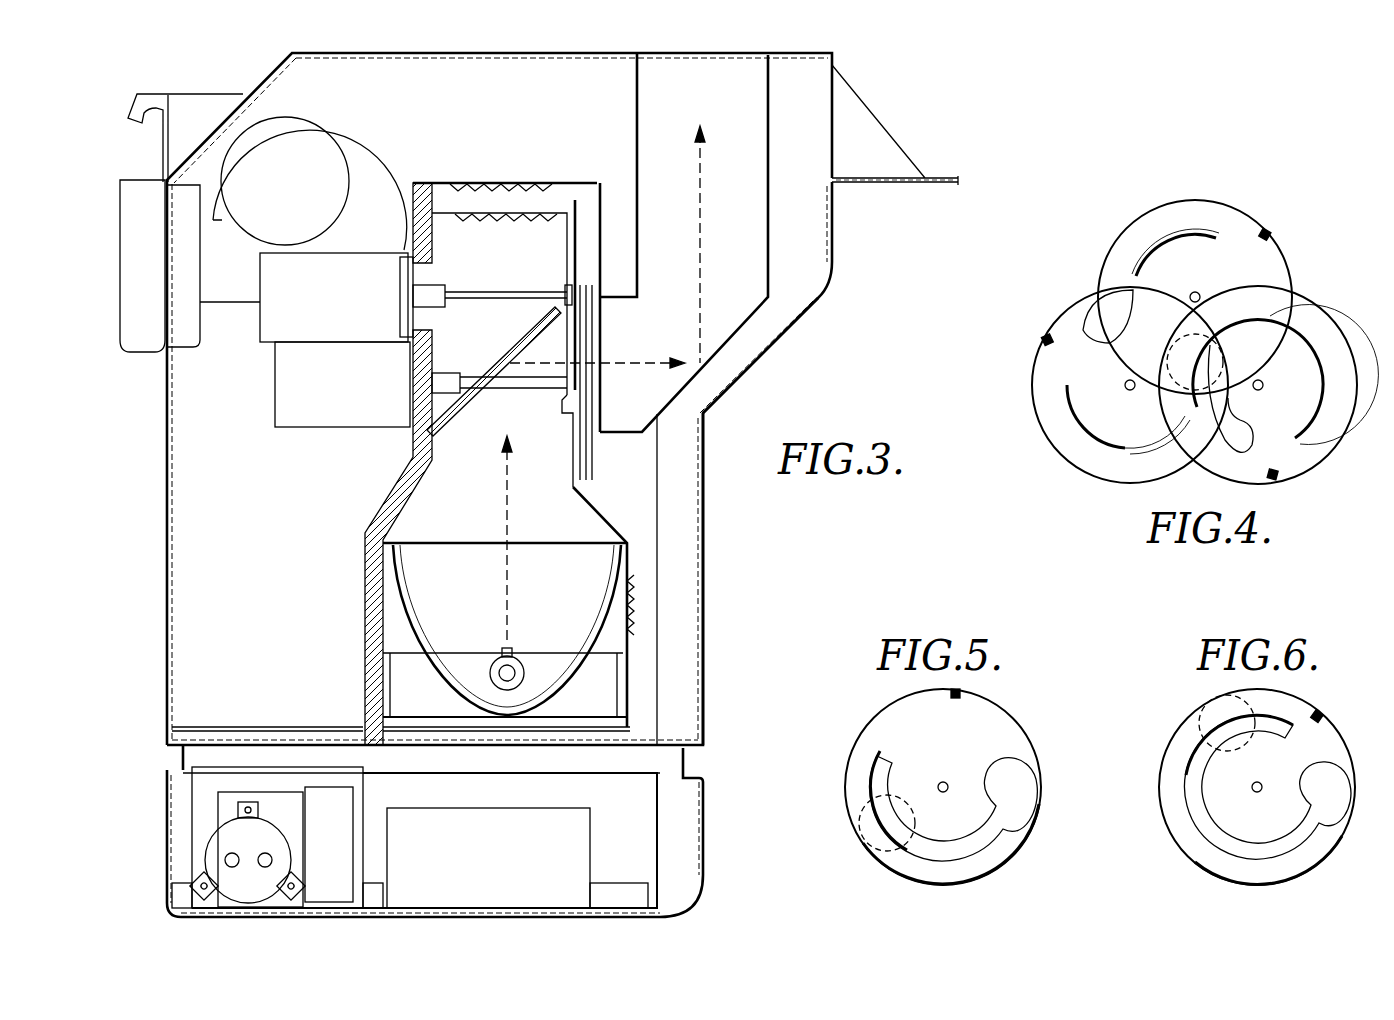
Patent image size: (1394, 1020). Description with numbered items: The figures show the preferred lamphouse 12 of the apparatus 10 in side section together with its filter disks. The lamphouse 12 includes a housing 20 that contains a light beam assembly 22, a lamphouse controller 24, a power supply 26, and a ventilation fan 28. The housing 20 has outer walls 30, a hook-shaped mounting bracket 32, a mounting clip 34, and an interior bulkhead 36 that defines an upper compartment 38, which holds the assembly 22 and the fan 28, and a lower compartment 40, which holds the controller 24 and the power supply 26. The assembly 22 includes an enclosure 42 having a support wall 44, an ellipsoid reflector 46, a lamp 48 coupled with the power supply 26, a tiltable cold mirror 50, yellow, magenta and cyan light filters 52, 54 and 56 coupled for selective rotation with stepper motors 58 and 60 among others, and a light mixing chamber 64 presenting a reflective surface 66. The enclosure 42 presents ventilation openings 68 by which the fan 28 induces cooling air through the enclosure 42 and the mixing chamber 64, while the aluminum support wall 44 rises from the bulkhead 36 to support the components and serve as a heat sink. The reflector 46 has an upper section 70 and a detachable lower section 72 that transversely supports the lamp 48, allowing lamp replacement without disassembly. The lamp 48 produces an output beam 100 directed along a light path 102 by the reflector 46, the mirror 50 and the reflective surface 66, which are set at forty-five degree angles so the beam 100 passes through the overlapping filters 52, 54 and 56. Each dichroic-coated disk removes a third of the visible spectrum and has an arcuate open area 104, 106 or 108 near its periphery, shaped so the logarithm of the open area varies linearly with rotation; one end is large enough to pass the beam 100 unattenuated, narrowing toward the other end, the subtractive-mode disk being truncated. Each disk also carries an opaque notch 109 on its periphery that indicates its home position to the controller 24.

In FIG. 3, the lighting apparatus 10 is at (740, 551).
In FIG. 3, the lamphouse 12 is at (806, 341).
In FIG. 3, the housing 20 is at (706, 603).
In FIG. 3, the light beam assembly 22 is at (538, 167).
In FIG. 3, the lamphouse controller 24 is at (585, 860).
In FIG. 3, the power supply 26 is at (208, 842).
In FIG. 3, the ventilation fan 28 is at (352, 125).
In FIG. 3, the outer walls 30 is at (730, 392).
In FIG. 3, the hook-shaped mounting bracket 32 is at (210, 100).
In FIG. 3, the mounting clip 34 is at (938, 175).
In FIG. 3, the interior bulkhead 36 is at (220, 727).
In FIG. 3, the upper compartment 38 is at (280, 575).
In FIG. 3, the lower compartment 40 is at (435, 831).
In FIG. 3, the enclosure 42 is at (605, 515).
In FIG. 3, the support wall 44 is at (393, 495).
In FIG. 3, the ellipsoid reflector 46 is at (446, 694).
In FIG. 3, the lamp 48 is at (526, 664).
In FIG. 3, the mirror 50 is at (510, 346).
In FIG. 3, the yellow light filter 52 is at (580, 196).
In FIG. 4, the yellow light filter 52 is at (1185, 205).
In FIG. 3, the magenta light filter 54 is at (578, 462).
In FIG. 4, the magenta light filter 54 is at (1062, 440).
In FIG. 3, the cyan light filter 56 is at (592, 420).
In FIG. 4, the cyan light filter 56 is at (1316, 312).
In FIG. 3, the stepper motor 58 is at (262, 322).
In FIG. 3, the stepper motor 60 is at (275, 405).
In FIG. 3, the light mixing chamber 64 is at (718, 224).
In FIG. 3, the reflective surface 66 is at (724, 343).
In FIG. 3, the ventilation openings 68 is at (507, 180).
In FIG. 3, the upper section 70 is at (418, 603).
In FIG. 3, the detachable lower section 72 is at (560, 688).
In FIG. 4, the output beam 100 is at (1226, 358).
In FIG. 5, the output beam 100 is at (860, 797).
In FIG. 6, the output beam 100 is at (1200, 716).
In FIG. 3, the light path 102 is at (702, 228).
In FIG. 4, the open area 104 is at (1120, 268).
In FIG. 4, the open area 106 is at (1162, 440).
In FIG. 4, the open area 108 is at (1212, 460).
In FIG. 4, the notch 109 is at (1265, 230).
In FIG. 5, the notch 109 is at (960, 694).
In FIG. 6, the notch 109 is at (1315, 722).